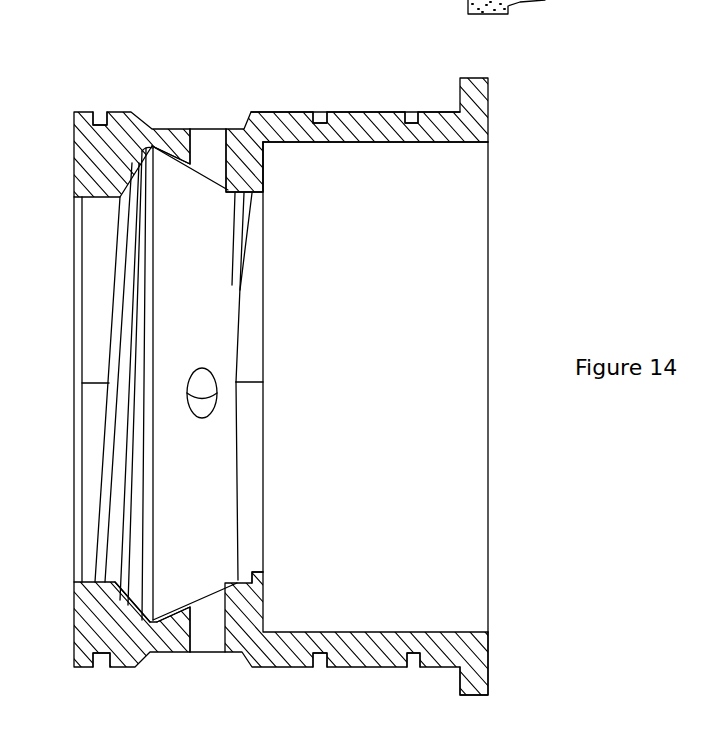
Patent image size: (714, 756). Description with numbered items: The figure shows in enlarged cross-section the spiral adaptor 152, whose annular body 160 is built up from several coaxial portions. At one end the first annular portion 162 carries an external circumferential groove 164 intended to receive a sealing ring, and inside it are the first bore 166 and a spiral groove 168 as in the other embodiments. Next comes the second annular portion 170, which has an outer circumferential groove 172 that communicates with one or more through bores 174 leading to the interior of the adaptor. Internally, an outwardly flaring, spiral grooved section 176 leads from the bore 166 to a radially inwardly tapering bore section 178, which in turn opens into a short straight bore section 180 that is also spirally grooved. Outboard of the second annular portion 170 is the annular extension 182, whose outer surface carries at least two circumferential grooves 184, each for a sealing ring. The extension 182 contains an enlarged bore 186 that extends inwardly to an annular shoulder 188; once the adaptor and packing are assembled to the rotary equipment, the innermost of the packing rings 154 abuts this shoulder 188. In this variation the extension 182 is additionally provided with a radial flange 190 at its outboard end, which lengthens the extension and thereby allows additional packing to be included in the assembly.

The adaptor 152 is at (77, 86).
The packing rings 154 is at (550, 12).
The annular body 160 is at (141, 109).
The first annular portion 162 is at (87, 632).
The external circumferential groove 164 is at (106, 110).
The first bore 166 is at (107, 196).
The spiral groove 168 is at (118, 368).
The second annular portion 170 is at (243, 128).
The outer circumferential groove 172 is at (169, 128).
The through bores 174 is at (205, 632).
The outwardly flaring spiral grooved section 176 is at (137, 593).
The radially inwardly tapering bore section 178 is at (190, 562).
The short straight bore section 180 is at (263, 573).
The annular extension 182 is at (371, 109).
The circumferential grooves 184 is at (317, 118).
The enlarged bore 186 is at (452, 142).
The annular shoulder 188 is at (263, 175).
The radial flange 190 is at (477, 690).